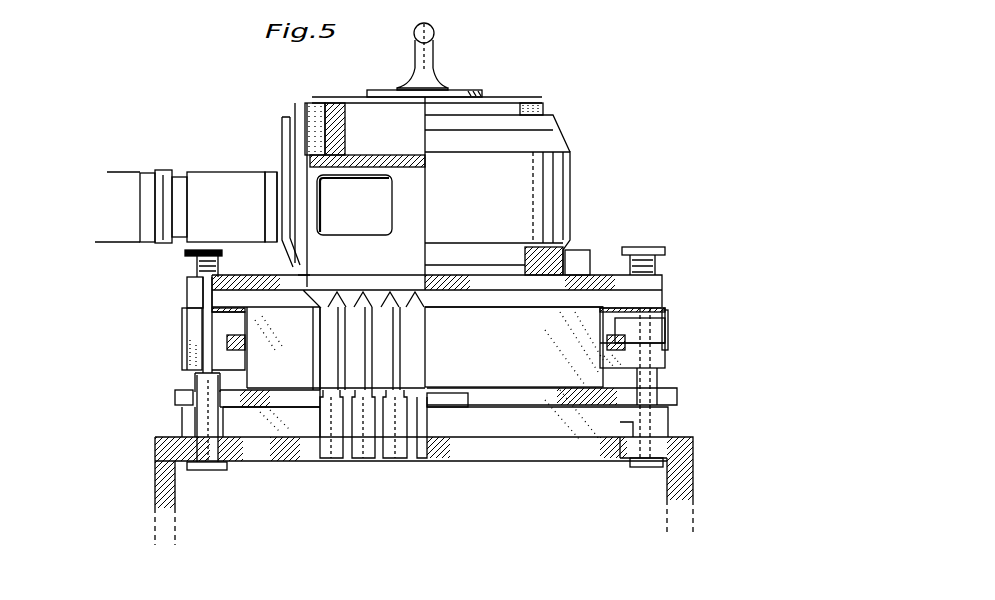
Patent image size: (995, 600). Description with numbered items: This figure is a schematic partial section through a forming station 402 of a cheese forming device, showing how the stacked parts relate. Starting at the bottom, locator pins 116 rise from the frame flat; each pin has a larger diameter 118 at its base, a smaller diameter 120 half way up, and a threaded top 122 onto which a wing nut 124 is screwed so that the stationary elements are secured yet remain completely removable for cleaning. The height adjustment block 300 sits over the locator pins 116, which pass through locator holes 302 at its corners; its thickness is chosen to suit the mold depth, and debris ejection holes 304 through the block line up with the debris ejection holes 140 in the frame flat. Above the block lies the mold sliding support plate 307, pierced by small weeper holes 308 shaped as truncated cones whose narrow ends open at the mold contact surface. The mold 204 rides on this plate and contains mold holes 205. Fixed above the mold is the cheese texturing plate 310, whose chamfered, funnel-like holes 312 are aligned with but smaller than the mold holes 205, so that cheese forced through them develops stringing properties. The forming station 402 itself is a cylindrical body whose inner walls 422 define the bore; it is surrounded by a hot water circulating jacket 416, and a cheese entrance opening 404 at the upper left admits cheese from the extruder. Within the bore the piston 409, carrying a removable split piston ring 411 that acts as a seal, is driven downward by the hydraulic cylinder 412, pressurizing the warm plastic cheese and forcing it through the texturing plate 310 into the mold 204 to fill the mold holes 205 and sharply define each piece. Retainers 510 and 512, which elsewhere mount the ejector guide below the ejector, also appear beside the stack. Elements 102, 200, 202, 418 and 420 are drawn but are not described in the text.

The base 102 is at (693, 478).
The locator pins 116 is at (205, 420).
The larger diameter 118 is at (195, 380).
The smaller diameter 120 is at (200, 298).
The threaded top 122 is at (197, 266).
The wing nuts 124 is at (660, 263).
The debris ejection holes 140 is at (351, 450).
The clamp block 200 is at (615, 320).
The lower clamp member 202 is at (665, 357).
The mold 204 is at (570, 358).
The mold holes 205 is at (410, 322).
The height adjustment block 300 is at (668, 422).
The locator holes 302 is at (220, 420).
The debris ejection holes 304 is at (325, 418).
The mold sliding support plate 307 is at (677, 395).
The weeper holes 308 is at (430, 390).
The cheese texturing plate 310 is at (663, 300).
The holes 312 is at (425, 308).
The forming station 402 is at (575, 167).
The cheese entrance opening 404 is at (368, 212).
The piston 409 is at (373, 125).
The piston ring 411 is at (305, 105).
The hydraulic cylinder 412 is at (415, 62).
The hot water circulating jacket 416 is at (290, 153).
The stop block 418 is at (590, 250).
The housing cap 420 is at (567, 138).
The inner walls 422 is at (307, 260).
The retainer 510 is at (182, 332).
The retainer 512 is at (668, 328).